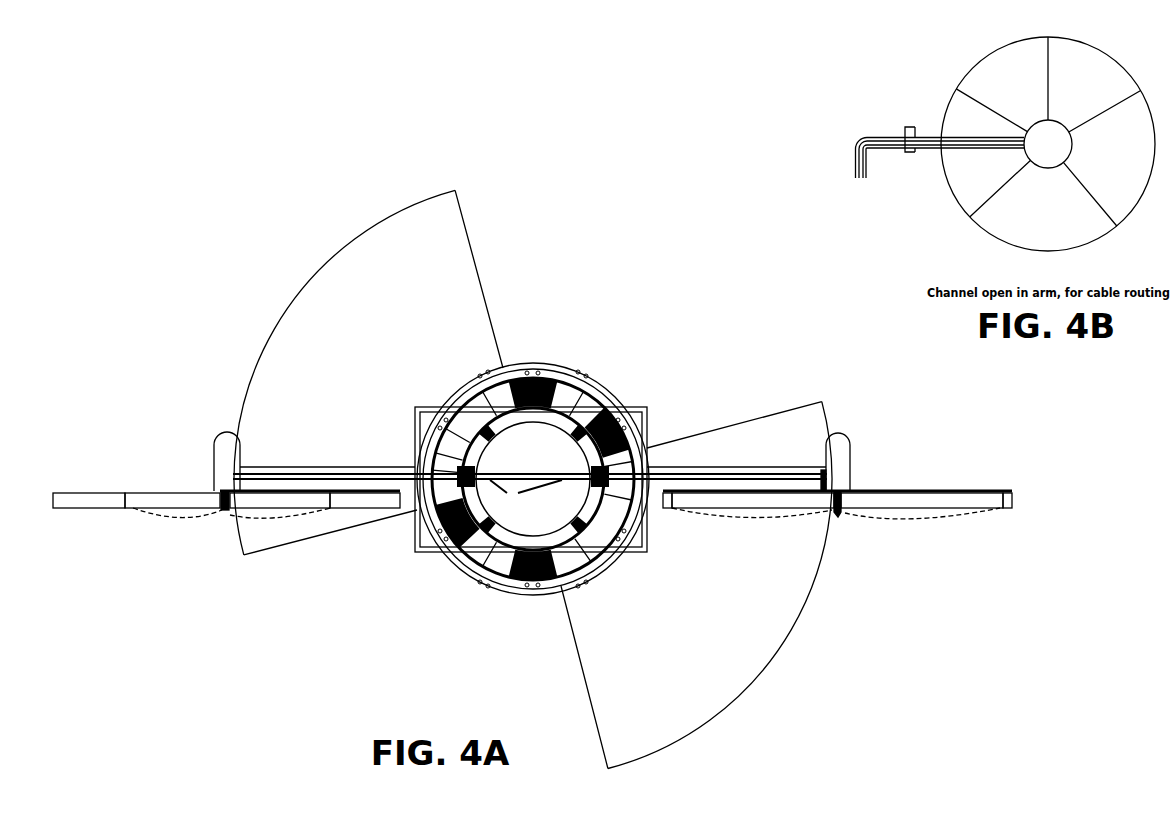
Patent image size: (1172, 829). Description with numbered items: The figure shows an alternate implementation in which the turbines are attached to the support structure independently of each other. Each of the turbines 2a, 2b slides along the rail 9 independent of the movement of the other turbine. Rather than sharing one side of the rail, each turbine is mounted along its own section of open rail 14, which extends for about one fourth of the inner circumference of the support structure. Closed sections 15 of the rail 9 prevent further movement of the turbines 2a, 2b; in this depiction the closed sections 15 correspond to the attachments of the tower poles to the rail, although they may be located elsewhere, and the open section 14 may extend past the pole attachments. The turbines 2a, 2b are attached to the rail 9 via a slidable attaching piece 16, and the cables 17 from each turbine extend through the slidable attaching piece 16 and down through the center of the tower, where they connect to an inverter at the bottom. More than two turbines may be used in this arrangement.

In FIG. 4A, the turbine 2a is at (849, 449).
In FIG. 4A, the turbine 2b is at (213, 457).
In FIG. 4A, the rail 9 is at (480, 407).
In FIG. 4A, the open rail 14 is at (588, 548).
In FIG. 4A, the closed sections 15 is at (603, 425).
In FIG. 4B, the slidable attaching piece 16 is at (934, 148).
In FIG. 4A, the cables 17 is at (500, 470).
In FIG. 4B, the cables 17 is at (857, 148).